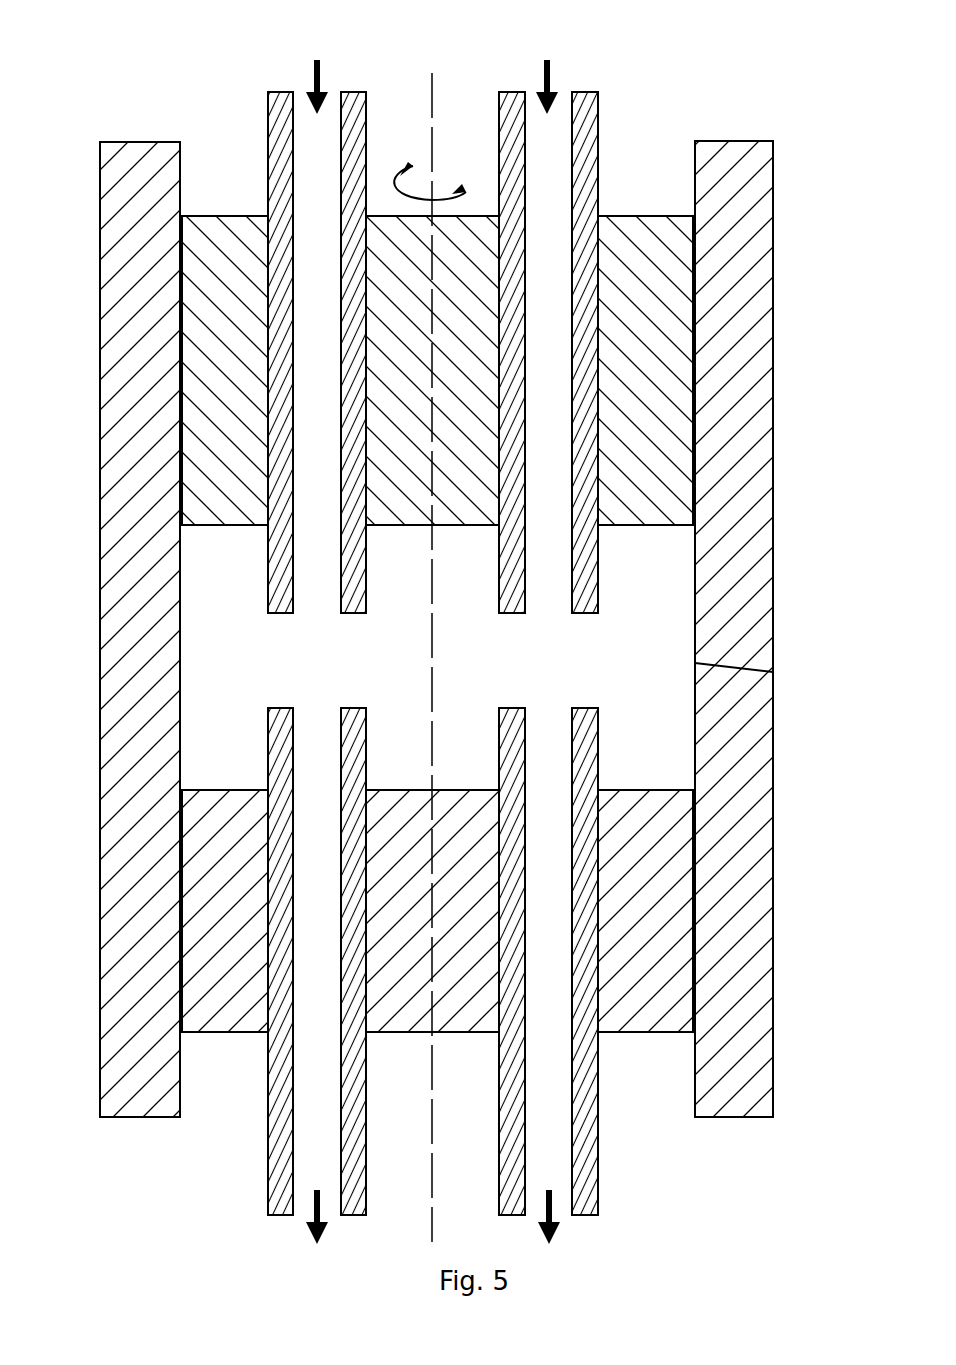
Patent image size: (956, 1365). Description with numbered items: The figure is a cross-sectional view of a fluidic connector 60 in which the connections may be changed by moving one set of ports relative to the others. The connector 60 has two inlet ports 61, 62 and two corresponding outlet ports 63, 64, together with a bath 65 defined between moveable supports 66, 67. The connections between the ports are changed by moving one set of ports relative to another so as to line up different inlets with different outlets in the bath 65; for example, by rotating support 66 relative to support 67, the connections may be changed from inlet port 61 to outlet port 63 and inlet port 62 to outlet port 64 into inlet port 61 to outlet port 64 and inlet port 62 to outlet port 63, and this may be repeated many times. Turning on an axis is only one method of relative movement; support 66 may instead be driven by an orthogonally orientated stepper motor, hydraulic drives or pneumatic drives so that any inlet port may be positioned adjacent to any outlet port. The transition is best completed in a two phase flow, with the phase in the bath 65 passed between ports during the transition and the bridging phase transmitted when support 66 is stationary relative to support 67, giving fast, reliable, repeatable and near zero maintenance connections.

The connector 60 is at (104, 101).
The inlet port 61 is at (268, 140).
The inlet port 62 is at (598, 138).
The outlet port 63 is at (268, 1163).
The outlet port 64 is at (599, 1165).
The bath 65 is at (84, 360).
The moveable support 66 is at (223, 525).
The moveable support 67 is at (221, 790).